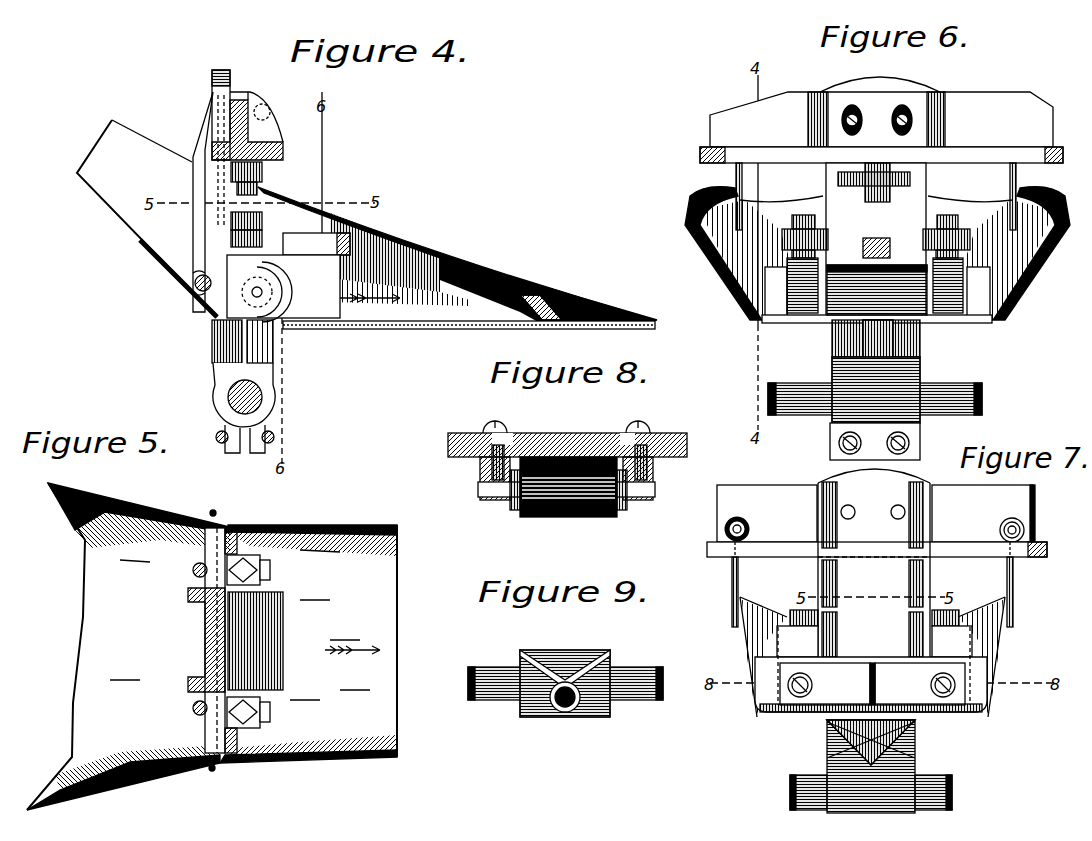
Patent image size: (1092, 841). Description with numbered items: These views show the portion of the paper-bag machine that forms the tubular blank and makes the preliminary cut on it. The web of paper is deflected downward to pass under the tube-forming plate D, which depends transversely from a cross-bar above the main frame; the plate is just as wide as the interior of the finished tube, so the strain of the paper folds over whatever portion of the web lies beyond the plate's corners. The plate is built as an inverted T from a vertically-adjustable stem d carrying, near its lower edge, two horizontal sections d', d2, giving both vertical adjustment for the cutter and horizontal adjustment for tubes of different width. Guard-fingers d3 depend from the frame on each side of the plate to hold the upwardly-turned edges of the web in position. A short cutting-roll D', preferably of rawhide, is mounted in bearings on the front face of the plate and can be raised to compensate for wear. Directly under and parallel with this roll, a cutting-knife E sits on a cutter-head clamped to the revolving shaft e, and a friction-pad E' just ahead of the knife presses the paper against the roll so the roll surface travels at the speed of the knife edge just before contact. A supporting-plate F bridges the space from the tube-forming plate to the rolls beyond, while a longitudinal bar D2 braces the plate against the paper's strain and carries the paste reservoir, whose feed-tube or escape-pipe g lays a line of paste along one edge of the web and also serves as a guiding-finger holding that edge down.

In FIG. 4, the tube-forming plate D is at (367, 221).
In FIG. 5, the tube-forming plate D is at (212, 646).
In FIG. 6, the tube-forming plate D is at (877, 198).
In FIG. 7, the tube-forming plate D is at (877, 609).
In FIG. 8, the tube-forming plate D is at (567, 442).
In FIG. 4, the cutting-roll D' is at (283, 288).
In FIG. 5, the cutting-roll D' is at (255, 641).
In FIG. 6, the cutting-roll D' is at (877, 290).
In FIG. 7, the cutting-roll D' is at (810, 733).
In FIG. 8, the cutting-roll D' is at (566, 496).
In FIG. 4, the longitudinal bar D2 is at (316, 244).
In FIG. 6, the longitudinal bar D2 is at (863, 248).
In FIG. 4, the vertically-adjustable stem d is at (217, 202).
In FIG. 5, the vertically-adjustable stem d is at (202, 640).
In FIG. 6, the vertically-adjustable stem d is at (876, 241).
In FIG. 7, the vertically-adjustable stem d is at (874, 563).
In FIG. 4, the horizontal section of tube-forming plate d' is at (209, 288).
In FIG. 5, the horizontal section of tube-forming plate d' is at (242, 757).
In FIG. 6, the horizontal section of tube-forming plate d' is at (746, 323).
In FIG. 7, the horizontal section of tube-forming plate d' is at (923, 690).
In FIG. 8, the horizontal section of tube-forming plate d' is at (469, 457).
In FIG. 5, the horizontal section of tube-forming plate d2 is at (236, 530).
In FIG. 6, the horizontal section of tube-forming plate d2 is at (992, 318).
In FIG. 7, the horizontal section of tube-forming plate d2 is at (871, 661).
In FIG. 8, the horizontal section of tube-forming plate d2 is at (687, 442).
In FIG. 4, the guard-fingers d3 is at (212, 152).
In FIG. 5, the guard-fingers d3 is at (220, 522).
In FIG. 6, the guard-fingers d3 is at (736, 186).
In FIG. 7, the guard-fingers d3 is at (740, 588).
In FIG. 4, the cutting-knife E is at (228, 373).
In FIG. 6, the cutting-knife E is at (858, 347).
In FIG. 7, the cutting-knife E is at (883, 766).
In FIG. 9, the cutting-knife E is at (565, 672).
In FIG. 4, the friction-pad E' is at (278, 342).
In FIG. 6, the friction-pad E' is at (928, 347).
In FIG. 9, the friction-pad E' is at (565, 714).
In FIG. 4, the revolving shaft e is at (263, 397).
In FIG. 6, the revolving shaft e is at (950, 392).
In FIG. 7, the revolving shaft e is at (938, 783).
In FIG. 9, the revolving shaft e is at (634, 673).
In FIG. 4, the supporting-plate F is at (408, 329).
In FIG. 4, the feed-tube or escape-pipe g is at (542, 312).